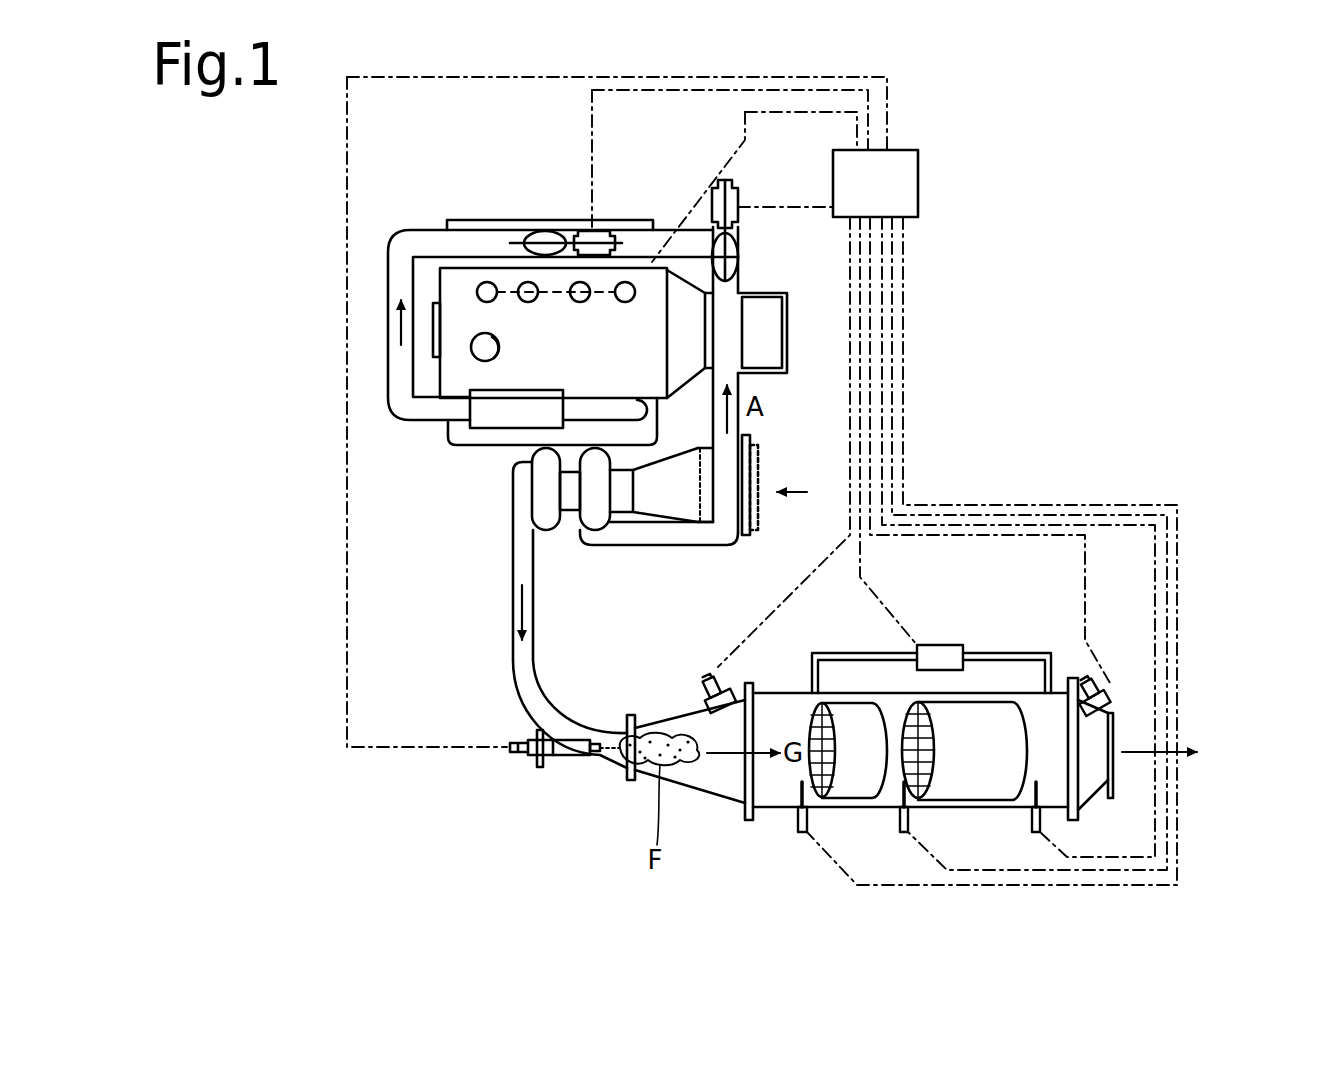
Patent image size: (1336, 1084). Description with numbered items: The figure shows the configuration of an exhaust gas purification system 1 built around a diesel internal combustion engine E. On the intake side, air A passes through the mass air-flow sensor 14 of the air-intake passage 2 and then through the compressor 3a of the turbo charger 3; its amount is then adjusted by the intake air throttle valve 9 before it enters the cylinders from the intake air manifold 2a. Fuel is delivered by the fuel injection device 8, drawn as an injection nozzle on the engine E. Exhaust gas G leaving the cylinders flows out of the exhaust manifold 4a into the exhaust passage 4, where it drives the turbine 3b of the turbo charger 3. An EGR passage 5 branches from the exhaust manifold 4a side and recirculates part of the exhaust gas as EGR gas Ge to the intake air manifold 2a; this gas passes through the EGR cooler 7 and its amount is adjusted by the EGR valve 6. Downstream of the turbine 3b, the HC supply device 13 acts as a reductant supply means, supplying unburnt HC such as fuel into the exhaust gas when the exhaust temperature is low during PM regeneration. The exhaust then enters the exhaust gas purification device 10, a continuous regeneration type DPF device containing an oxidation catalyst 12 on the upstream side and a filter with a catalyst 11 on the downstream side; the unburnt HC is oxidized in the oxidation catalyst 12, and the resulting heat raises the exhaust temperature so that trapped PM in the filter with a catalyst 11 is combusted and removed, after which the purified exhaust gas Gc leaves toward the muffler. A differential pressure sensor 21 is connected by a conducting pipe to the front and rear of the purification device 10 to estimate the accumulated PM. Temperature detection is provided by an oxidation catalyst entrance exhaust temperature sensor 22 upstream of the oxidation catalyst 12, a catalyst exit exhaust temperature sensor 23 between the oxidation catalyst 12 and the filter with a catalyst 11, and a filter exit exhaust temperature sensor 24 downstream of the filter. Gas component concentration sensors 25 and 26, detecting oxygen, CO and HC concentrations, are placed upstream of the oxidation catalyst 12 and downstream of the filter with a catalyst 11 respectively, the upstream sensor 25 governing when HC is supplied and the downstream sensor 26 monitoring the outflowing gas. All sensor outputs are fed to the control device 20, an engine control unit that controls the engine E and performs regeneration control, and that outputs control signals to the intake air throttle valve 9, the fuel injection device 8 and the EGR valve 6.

The exhaust gas purification system 1 is at (965, 360).
The diesel internal combustion engine E is at (508, 323).
The air-intake passage 2 is at (706, 538).
The intake air manifold 2a is at (500, 227).
The turbo charger 3 is at (526, 545).
The compressor 3a is at (596, 512).
The turbine 3b is at (547, 512).
The exhaust passage 4 is at (513, 660).
The exhaust manifold 4a is at (500, 440).
The EGR passage 5 is at (388, 383).
The EGR valve 6 is at (545, 240).
The EGR cooler 7 is at (488, 412).
The fuel injection device (injection nozzle) 8 is at (628, 283).
The intake air throttle valve 9 is at (740, 256).
The exhaust gas purification device 10 is at (842, 808).
The filter with a catalyst 11 is at (970, 745).
The oxidation catalyst 12 is at (865, 742).
The HC supply device 13 is at (570, 757).
The mass air-flow sensor 14 is at (676, 500).
The control device (ECU) 20 is at (905, 172).
The differential pressure sensor 21 is at (933, 645).
The oxidation catalyst entrance exhaust temperature sensor 22 is at (800, 835).
The catalyst exit exhaust temperature sensor 23 is at (904, 835).
The filter exit exhaust temperature sensor 24 is at (1035, 835).
The upstream gas component concentration sensor 25 is at (702, 698).
The downstream gas component concentration sensor 26 is at (1100, 690).